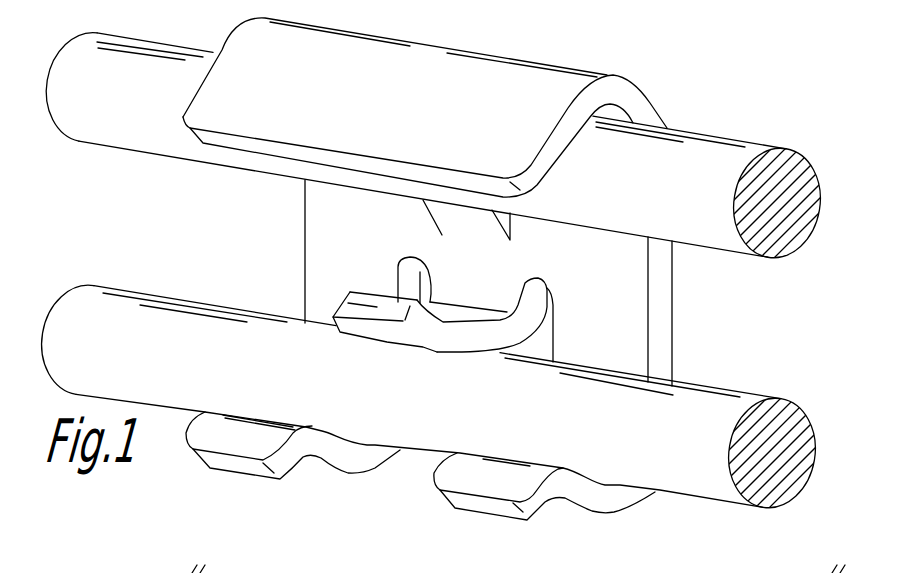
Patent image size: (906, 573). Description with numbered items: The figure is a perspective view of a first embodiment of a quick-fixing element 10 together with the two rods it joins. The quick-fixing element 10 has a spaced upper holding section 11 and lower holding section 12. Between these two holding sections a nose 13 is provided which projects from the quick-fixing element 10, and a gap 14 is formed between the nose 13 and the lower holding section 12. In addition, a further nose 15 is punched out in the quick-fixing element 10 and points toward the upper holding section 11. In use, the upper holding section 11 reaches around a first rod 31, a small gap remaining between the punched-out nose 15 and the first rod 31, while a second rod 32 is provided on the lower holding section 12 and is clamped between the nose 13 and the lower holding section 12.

The quick-fixing element 10 is at (707, 280).
The upper holding section 11 is at (549, 97).
The lower holding section 12 is at (620, 552).
The nose 13 is at (345, 303).
The gap 14 is at (717, 360).
The nose 15 is at (465, 215).
The first rod 31 is at (695, 162).
The second rod 32 is at (725, 552).